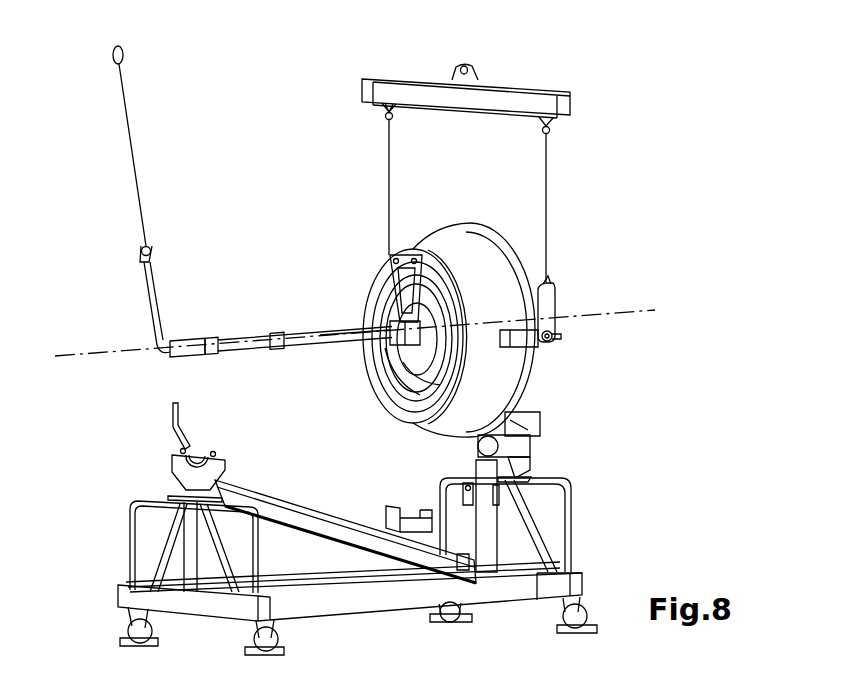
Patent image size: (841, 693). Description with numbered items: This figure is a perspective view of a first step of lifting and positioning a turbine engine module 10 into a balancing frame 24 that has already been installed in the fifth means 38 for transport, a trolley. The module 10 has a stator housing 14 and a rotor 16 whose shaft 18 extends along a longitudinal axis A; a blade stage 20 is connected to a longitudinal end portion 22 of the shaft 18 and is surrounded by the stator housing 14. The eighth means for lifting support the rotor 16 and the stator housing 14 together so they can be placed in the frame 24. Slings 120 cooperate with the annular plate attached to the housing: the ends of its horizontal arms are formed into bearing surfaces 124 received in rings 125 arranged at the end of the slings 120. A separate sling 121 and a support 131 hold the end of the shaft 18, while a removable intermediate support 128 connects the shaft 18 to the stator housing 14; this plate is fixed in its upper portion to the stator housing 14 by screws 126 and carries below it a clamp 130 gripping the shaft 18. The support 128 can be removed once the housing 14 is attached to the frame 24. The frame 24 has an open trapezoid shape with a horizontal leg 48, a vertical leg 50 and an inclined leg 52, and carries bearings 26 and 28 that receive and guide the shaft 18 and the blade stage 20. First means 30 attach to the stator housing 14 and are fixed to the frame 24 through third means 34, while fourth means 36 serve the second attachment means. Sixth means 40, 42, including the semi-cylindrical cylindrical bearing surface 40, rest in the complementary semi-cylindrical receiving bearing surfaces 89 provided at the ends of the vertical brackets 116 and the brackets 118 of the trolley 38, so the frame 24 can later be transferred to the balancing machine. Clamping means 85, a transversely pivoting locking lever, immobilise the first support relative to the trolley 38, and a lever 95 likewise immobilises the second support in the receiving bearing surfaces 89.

The longitudinal axis A is at (640, 316).
The turbine engine module 10 is at (291, 303).
The stator housing 14 is at (455, 246).
The rotor 16 is at (246, 332).
The shaft 18 is at (318, 344).
The blade stage 20 is at (406, 392).
The longitudinal end portion 22 is at (385, 302).
The balancing frame 24 is at (346, 546).
The bearing 26 is at (203, 446).
The bearing 28 is at (520, 418).
The first means 30 is at (503, 238).
The third means 34 is at (500, 498).
The fourth means 36 is at (418, 510).
The fifth means for transport 38 is at (596, 570).
The cylindrical bearing surface 40 is at (183, 466).
The sixth means 42 is at (532, 476).
The horizontal leg 48 is at (455, 563).
The vertical leg 50 is at (496, 533).
The inclined leg 52 is at (308, 530).
The clamping means 85 is at (530, 440).
The receiving bearing surface 89 is at (176, 490).
The lever 95 is at (173, 412).
The vertical bracket 116 is at (512, 548).
The bracket 118 is at (186, 570).
The slings 120 is at (389, 158).
The sling 121 is at (126, 112).
The bearing surfaces 124 is at (557, 334).
The rings 125 is at (552, 345).
The screws 126 is at (404, 254).
The removable intermediate support 128 is at (389, 266).
The clamp 130 is at (394, 320).
The support 131 is at (150, 308).